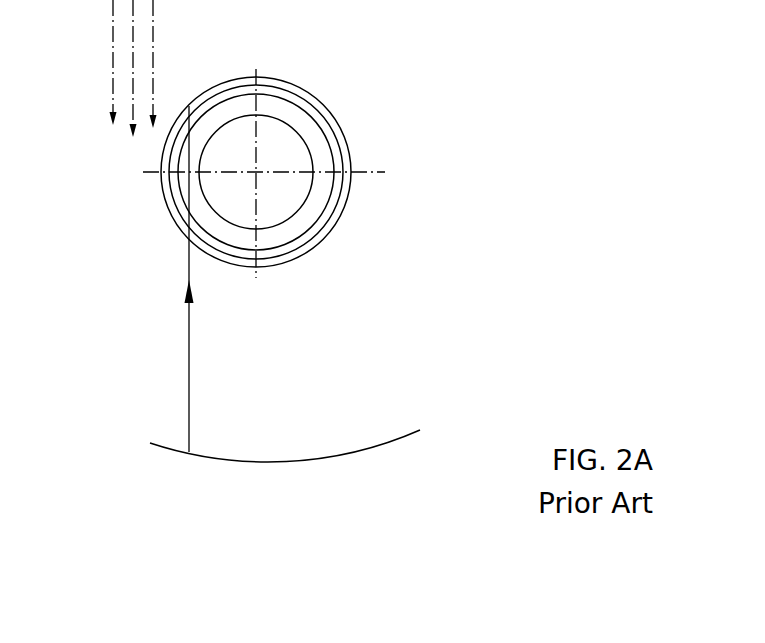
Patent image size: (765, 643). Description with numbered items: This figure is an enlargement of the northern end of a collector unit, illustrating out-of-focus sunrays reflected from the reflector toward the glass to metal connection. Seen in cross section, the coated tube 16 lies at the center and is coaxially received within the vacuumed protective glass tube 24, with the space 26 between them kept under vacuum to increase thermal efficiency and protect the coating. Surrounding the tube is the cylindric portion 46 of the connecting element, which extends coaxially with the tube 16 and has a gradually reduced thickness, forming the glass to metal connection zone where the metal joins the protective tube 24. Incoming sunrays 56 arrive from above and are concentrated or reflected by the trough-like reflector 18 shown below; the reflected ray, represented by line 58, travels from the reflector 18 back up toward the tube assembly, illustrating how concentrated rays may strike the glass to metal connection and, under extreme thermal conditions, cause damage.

The coated tube 16 is at (305, 147).
The solar reflector 18 is at (378, 445).
The protective glass tube 24 is at (293, 85).
The space 26 is at (320, 165).
The cylindric portion 46 is at (306, 236).
The sunrays 56 is at (132, 53).
The line representing reflected sunrays 58 is at (189, 376).